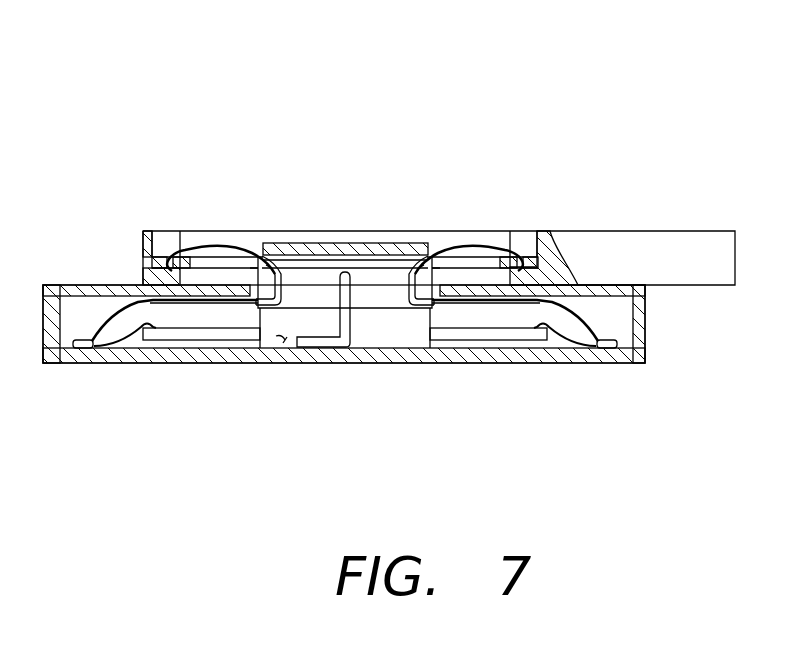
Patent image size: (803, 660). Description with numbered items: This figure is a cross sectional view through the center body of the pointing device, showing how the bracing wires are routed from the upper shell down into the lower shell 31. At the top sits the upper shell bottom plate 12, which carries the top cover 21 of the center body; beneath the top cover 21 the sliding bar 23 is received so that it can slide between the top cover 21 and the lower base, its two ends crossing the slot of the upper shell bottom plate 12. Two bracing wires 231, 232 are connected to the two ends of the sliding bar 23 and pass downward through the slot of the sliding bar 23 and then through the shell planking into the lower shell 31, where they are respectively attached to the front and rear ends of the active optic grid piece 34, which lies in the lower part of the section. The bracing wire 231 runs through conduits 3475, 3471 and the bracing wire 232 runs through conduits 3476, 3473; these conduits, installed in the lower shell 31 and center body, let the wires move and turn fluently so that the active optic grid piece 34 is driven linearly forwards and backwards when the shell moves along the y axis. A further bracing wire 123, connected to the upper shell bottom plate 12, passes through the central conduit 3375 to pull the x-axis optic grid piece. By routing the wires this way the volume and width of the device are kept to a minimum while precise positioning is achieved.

The upper shell bottom plate 12 is at (647, 245).
The top cover 21 is at (335, 245).
The sliding bar 23 is at (160, 258).
The lower shell 31 is at (647, 322).
The active optic grid piece 34 is at (229, 332).
The bracing wire 123 is at (289, 340).
The bracing wire 231 is at (125, 340).
The bracing wire 232 is at (566, 335).
The conduit 3375 is at (350, 277).
The conduit 3471 is at (80, 350).
The conduit 3473 is at (601, 352).
The conduit 3475 is at (275, 262).
The conduit 3476 is at (412, 265).